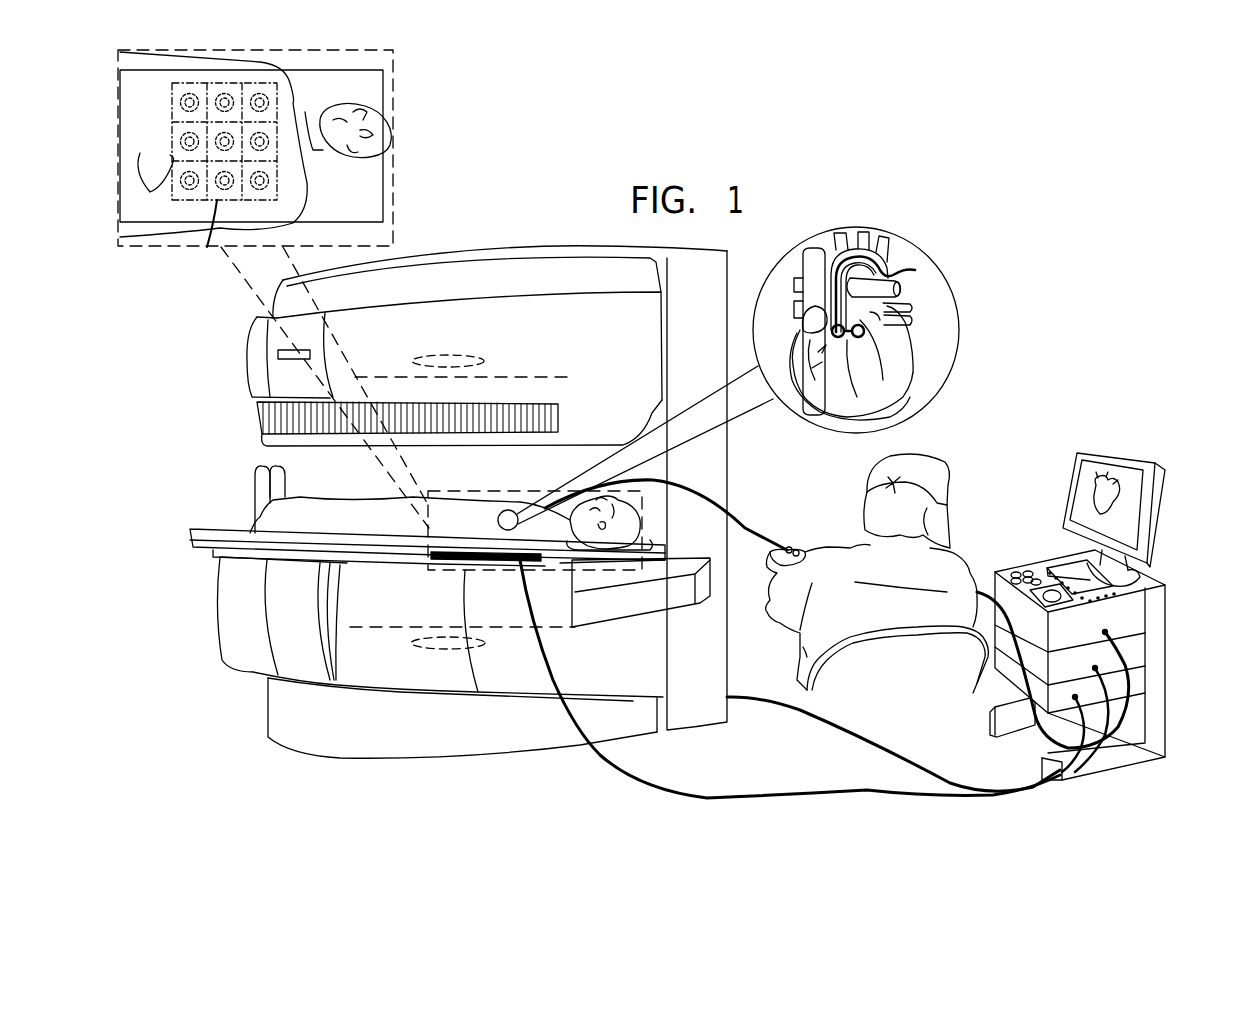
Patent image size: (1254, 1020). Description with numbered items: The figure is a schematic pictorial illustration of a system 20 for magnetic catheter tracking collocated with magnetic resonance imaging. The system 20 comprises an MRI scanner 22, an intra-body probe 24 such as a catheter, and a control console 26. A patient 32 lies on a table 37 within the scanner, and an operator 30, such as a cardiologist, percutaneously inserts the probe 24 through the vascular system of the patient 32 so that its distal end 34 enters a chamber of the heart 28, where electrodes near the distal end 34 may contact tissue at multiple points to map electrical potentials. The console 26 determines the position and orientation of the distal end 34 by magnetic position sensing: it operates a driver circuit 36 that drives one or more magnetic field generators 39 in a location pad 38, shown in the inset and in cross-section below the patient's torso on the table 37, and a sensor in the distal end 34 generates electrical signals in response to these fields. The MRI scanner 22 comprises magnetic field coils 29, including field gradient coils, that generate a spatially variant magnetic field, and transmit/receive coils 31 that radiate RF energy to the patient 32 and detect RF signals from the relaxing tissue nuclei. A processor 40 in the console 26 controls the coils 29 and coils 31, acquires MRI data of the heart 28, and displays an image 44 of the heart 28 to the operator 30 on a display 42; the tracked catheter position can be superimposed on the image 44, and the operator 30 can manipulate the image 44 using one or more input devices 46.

The system 20 is at (1030, 382).
The MRI scanner 22 is at (528, 242).
The intra-body probe 24 is at (750, 528).
The control console 26 is at (1167, 577).
The heart 28 is at (908, 380).
The magnetic field coils 29 is at (512, 378).
The operator 30 is at (952, 560).
The transmit/receive coils 31 is at (445, 355).
The patient 32 is at (358, 497).
The distal end 34 is at (873, 330).
The driver circuit 36 is at (1140, 658).
The table 37 is at (190, 537).
The location pad 38 is at (282, 88).
The magnetic field generators 39 is at (183, 158).
The processor 40 is at (1140, 633).
The display 42 is at (1164, 470).
The image 44 is at (1092, 492).
The input devices 46 is at (1048, 588).